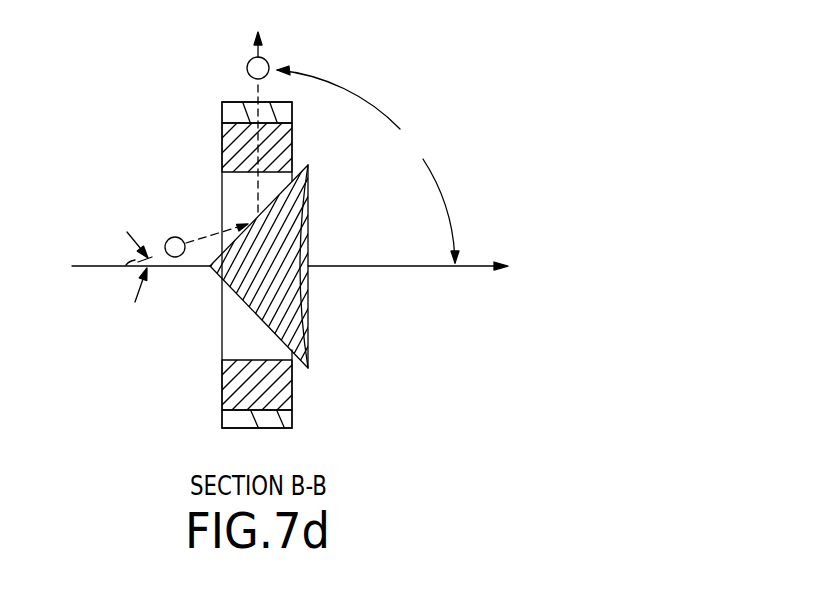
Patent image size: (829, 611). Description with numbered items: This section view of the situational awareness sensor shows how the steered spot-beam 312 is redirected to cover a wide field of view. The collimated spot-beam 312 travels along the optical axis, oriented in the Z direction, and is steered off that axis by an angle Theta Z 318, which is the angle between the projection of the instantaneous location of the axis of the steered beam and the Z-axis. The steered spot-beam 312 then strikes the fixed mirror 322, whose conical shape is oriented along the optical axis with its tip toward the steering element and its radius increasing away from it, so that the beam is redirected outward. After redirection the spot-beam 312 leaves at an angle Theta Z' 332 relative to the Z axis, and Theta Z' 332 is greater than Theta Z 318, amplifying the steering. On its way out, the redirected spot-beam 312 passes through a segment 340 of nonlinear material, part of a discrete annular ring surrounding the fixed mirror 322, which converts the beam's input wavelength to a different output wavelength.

The spot-beam 312 is at (247, 68).
The Theta Z 318 is at (133, 243).
The fixed mirror 322 is at (240, 318).
The Theta Z' 332 is at (437, 185).
The segment of NLM 340 is at (222, 118).